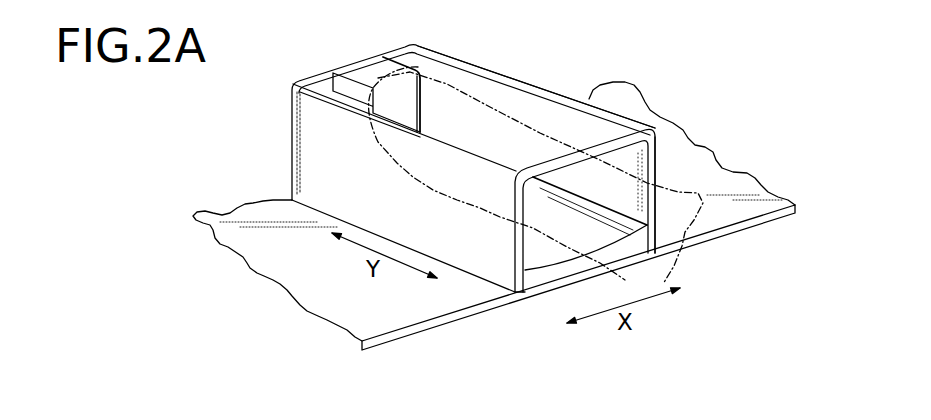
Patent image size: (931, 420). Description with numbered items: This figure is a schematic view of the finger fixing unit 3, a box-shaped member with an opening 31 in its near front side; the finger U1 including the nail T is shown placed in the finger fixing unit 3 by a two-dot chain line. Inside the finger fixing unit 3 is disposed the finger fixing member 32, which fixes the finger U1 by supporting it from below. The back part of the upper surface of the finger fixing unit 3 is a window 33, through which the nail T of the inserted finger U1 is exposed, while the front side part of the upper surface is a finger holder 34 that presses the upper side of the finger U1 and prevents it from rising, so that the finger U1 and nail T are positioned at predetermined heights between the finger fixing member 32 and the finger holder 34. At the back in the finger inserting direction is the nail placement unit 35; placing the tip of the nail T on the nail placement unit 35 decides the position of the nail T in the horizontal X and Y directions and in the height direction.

The finger fixing unit 3 is at (516, 156).
The opening 31 is at (533, 247).
The finger fixing member 32 is at (547, 283).
The window 33 is at (490, 82).
The finger holder 34 is at (602, 118).
The nail placement unit 35 is at (362, 68).
The nail T is at (440, 84).
The finger U1 is at (682, 181).